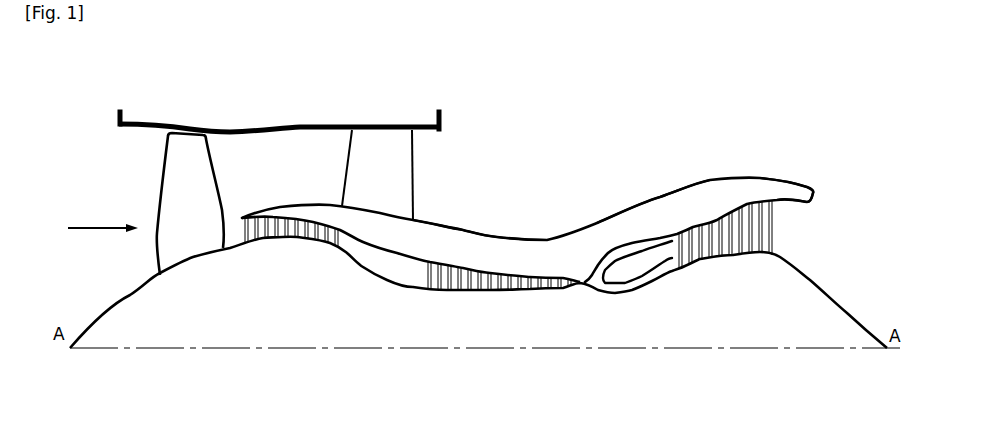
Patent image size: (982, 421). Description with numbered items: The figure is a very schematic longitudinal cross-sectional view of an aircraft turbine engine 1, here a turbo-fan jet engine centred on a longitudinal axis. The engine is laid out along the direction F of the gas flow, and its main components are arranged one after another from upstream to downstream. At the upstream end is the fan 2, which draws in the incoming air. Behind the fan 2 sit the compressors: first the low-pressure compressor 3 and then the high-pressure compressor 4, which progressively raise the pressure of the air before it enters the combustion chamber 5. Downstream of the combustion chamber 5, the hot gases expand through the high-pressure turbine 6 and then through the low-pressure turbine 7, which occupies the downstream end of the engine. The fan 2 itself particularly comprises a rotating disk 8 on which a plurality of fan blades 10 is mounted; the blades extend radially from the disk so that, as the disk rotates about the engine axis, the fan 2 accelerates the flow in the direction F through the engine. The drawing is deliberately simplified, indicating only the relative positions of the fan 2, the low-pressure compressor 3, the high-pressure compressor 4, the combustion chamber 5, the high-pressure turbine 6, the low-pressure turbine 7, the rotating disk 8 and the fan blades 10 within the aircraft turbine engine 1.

The aircraft turbine engine 1 is at (522, 150).
The fan 2 is at (204, 119).
The low-pressure compressor 3 is at (269, 199).
The high-pressure compressor 4 is at (478, 257).
The combustion chamber 5 is at (623, 262).
The high-pressure turbine 6 is at (688, 210).
The low-pressure turbine 7 is at (742, 170).
The rotating disk 8 is at (195, 258).
The fan blades 10 is at (173, 177).
The direction of the gas flow F is at (103, 218).